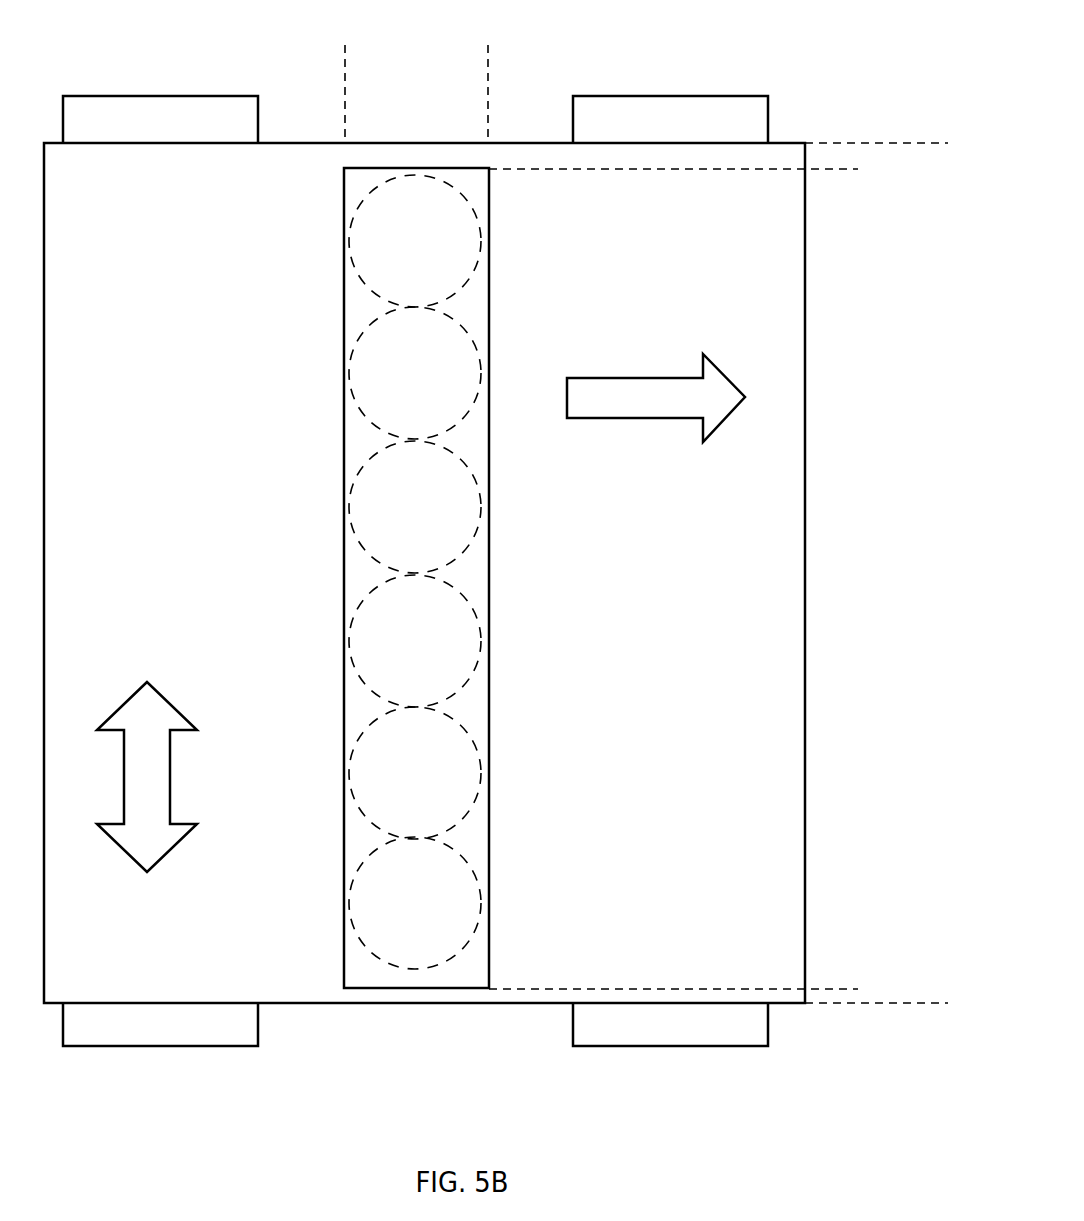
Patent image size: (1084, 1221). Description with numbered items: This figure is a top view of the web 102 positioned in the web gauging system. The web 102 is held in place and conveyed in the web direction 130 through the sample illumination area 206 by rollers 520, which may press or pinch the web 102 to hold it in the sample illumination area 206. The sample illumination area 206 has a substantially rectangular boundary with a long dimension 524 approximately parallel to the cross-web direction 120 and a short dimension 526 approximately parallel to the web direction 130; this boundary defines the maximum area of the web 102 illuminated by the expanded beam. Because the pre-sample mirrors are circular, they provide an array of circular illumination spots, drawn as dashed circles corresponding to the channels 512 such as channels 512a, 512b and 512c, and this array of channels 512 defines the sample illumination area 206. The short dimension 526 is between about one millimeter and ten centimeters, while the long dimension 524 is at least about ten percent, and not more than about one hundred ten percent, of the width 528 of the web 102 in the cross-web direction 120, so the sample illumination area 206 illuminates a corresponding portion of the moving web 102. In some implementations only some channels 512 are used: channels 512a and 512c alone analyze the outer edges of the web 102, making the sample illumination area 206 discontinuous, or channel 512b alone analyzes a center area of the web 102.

The web 102 is at (132, 500).
The rollers 520 is at (717, 96).
The channels 512 is at (416, 656).
The sample illumination area 206 is at (416, 656).
The channel 512a is at (385, 931).
The channel 512b is at (385, 663).
The channel 512c is at (385, 253).
The short dimension 526 is at (487, 85).
The long dimension 524 is at (845, 170).
The width 528 is at (938, 144).
The web direction 130 is at (617, 408).
The cross-web direction 120 is at (168, 792).